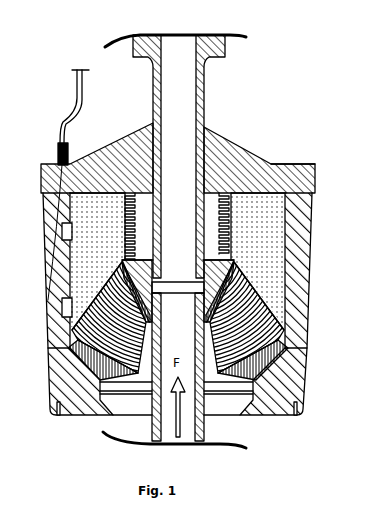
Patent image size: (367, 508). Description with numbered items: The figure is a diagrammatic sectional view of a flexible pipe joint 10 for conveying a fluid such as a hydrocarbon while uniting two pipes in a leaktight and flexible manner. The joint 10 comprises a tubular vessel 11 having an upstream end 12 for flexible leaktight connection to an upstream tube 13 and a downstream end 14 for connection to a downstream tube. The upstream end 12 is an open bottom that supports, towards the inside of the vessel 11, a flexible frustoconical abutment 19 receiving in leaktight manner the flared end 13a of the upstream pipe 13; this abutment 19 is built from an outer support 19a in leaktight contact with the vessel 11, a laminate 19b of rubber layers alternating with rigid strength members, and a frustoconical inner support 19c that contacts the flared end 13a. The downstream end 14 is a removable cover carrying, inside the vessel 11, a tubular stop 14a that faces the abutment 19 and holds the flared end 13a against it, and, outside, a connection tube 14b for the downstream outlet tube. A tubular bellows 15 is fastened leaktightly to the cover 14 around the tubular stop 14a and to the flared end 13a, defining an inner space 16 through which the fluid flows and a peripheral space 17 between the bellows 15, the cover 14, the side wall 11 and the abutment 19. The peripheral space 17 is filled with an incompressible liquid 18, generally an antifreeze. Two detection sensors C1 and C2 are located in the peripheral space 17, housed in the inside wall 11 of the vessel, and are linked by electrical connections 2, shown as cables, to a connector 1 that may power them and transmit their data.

The flexible pipe joint 10 is at (87, 48).
The connector 1 is at (57, 155).
The electrical connections 2 is at (47, 202).
The detection sensor C1 is at (62, 313).
The detection sensor C2 is at (62, 236).
The tubular vessel 11 is at (300, 272).
The upstream end 12 is at (273, 416).
The upstream tube 13 is at (204, 427).
The flared end 13a is at (220, 265).
The downstream end 14 is at (262, 155).
The tubular stop 14a is at (147, 209).
The connection tube 14b is at (205, 100).
The tubular bellows 15 is at (272, 163).
The inner space 16 is at (215, 199).
The peripheral space 17 is at (110, 207).
The incompressible liquid 18 is at (83, 248).
The flexible frustoconical abutment 19 is at (124, 362).
The outer support 19a is at (262, 381).
The laminate 19b is at (270, 334).
The frustoconical inner support 19c is at (232, 285).